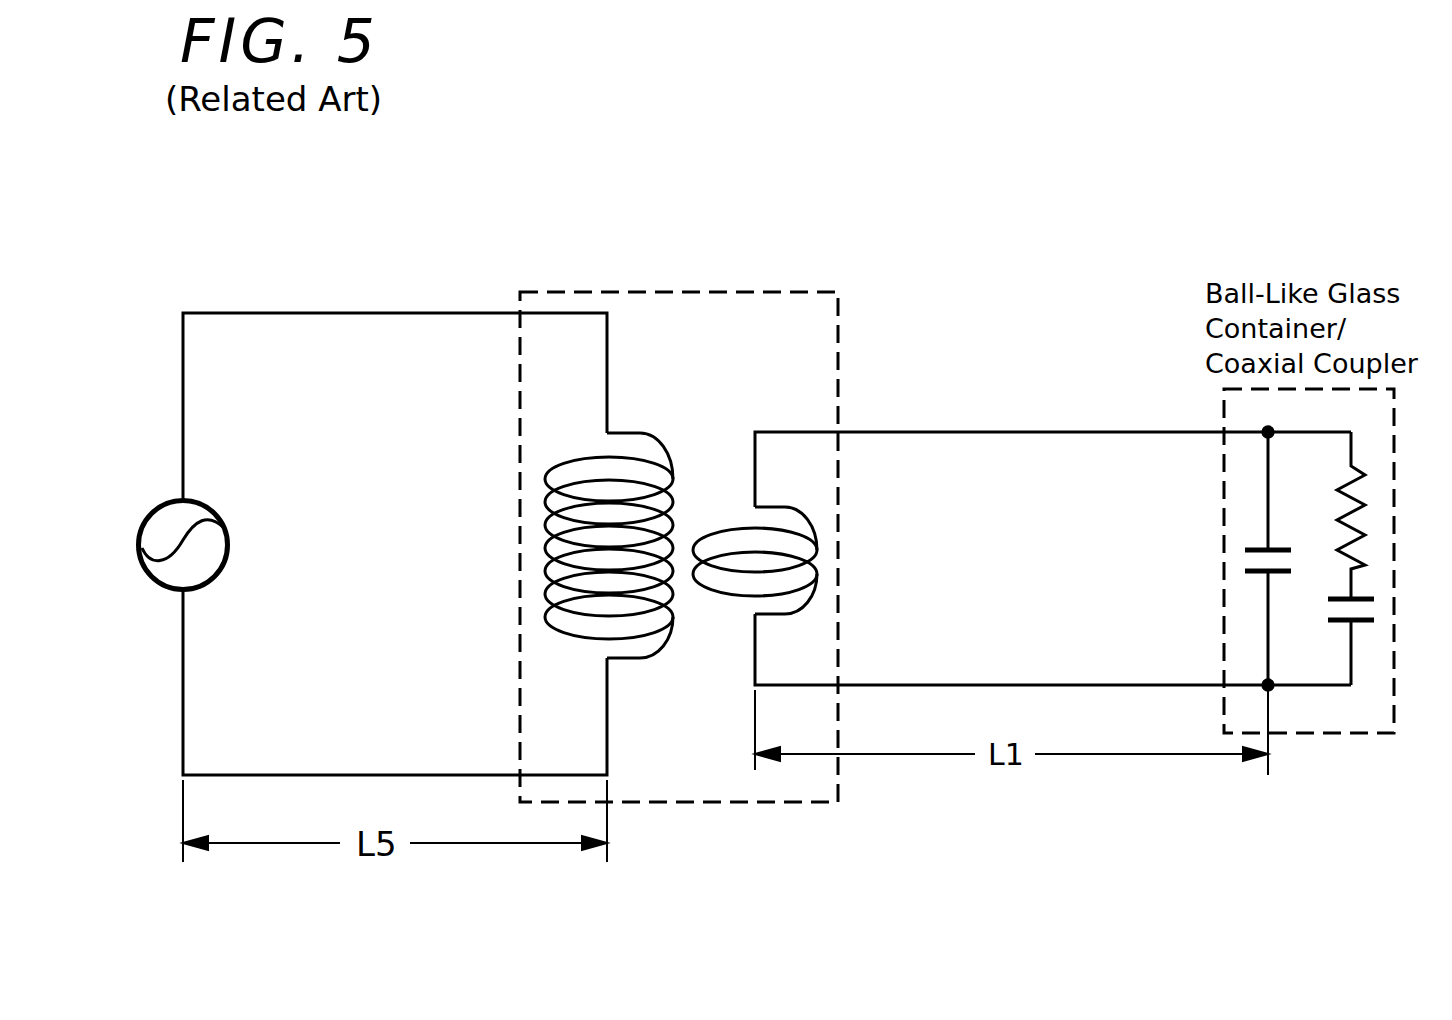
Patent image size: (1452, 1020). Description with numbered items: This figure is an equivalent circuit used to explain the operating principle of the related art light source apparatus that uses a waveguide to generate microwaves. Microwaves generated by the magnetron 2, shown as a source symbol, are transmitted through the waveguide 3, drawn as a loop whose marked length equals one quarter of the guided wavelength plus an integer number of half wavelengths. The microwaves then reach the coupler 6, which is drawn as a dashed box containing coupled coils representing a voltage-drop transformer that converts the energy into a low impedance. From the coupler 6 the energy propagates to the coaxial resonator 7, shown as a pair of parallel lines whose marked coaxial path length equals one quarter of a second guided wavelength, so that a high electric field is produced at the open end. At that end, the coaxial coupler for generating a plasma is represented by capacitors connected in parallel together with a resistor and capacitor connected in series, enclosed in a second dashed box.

The magnetron 2 is at (264, 528).
The waveguide 3 is at (395, 523).
The coupler 6 is at (849, 274).
The coaxial resonator 7 is at (1053, 538).